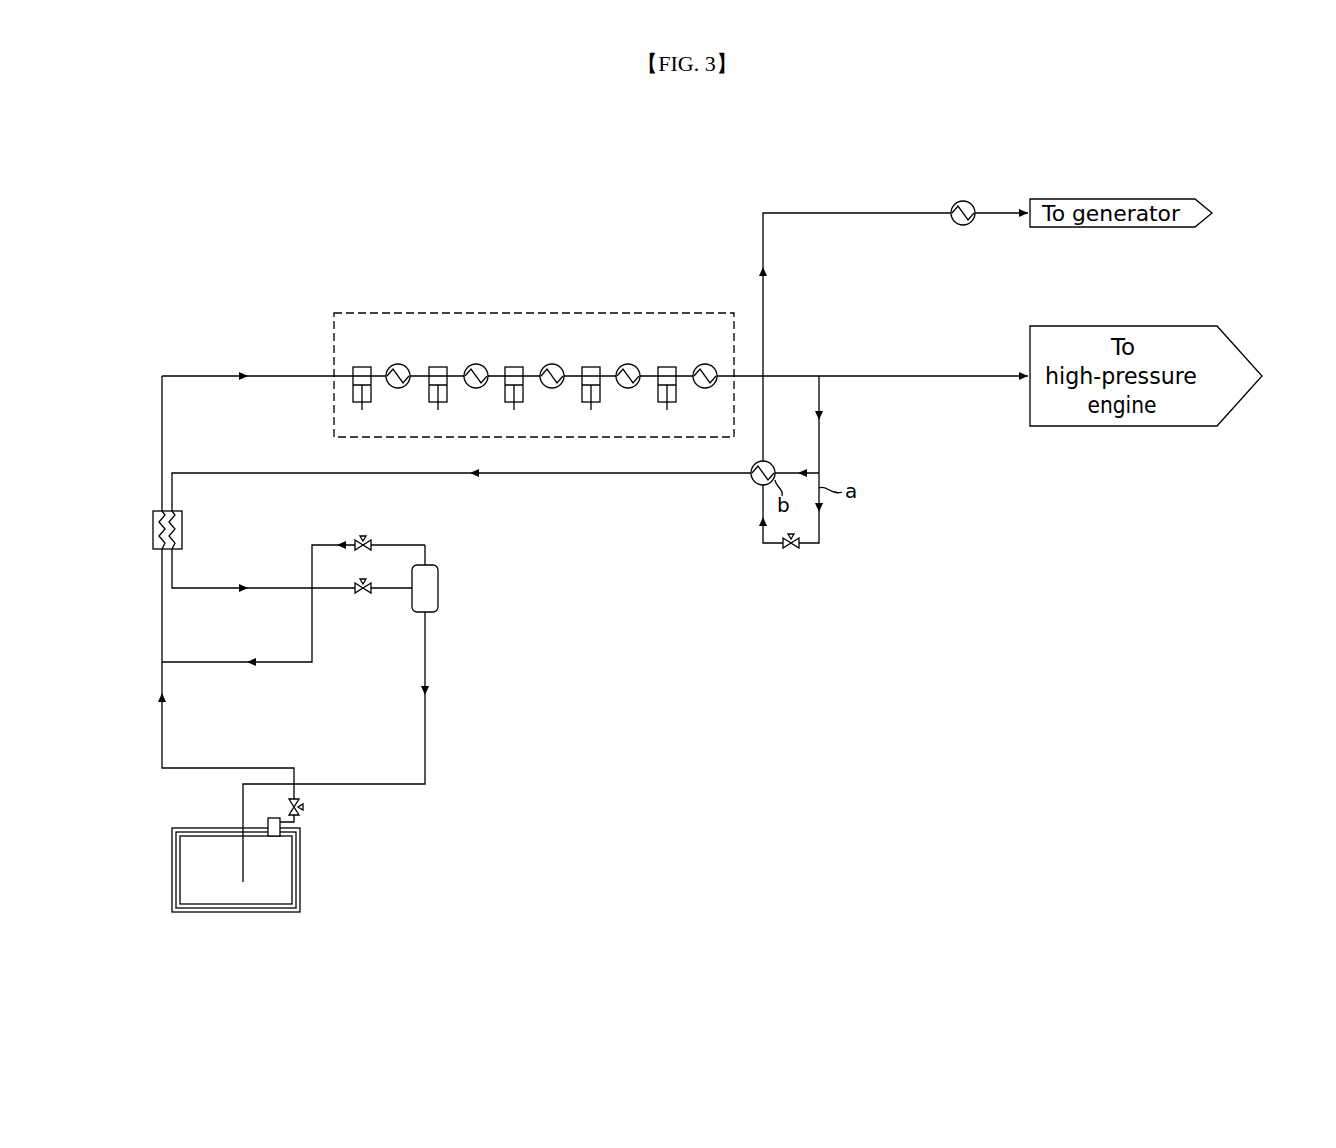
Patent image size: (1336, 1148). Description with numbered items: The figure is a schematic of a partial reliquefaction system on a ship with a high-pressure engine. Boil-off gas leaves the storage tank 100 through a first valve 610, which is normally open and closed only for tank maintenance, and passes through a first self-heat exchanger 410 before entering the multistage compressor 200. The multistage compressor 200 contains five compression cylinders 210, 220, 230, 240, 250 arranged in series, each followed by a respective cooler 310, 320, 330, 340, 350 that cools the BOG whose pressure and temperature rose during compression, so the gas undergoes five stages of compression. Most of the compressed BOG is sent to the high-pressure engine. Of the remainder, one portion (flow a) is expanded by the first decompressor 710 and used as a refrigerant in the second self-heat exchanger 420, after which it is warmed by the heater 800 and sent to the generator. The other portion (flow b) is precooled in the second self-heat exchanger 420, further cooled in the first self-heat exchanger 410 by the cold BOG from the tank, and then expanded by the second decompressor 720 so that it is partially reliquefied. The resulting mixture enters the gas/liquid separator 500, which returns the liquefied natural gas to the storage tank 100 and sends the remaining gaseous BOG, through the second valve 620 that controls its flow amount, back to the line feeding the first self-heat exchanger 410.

The storage tank 100 is at (236, 912).
The multistage compressor 200 is at (517, 313).
The compression cylinder 210 is at (362, 367).
The compression cylinder 220 is at (438, 367).
The compression cylinder 230 is at (514, 367).
The compression cylinder 240 is at (591, 367).
The compression cylinder 250 is at (667, 367).
The cooler 310 is at (398, 388).
The cooler 320 is at (476, 388).
The cooler 330 is at (552, 388).
The cooler 340 is at (628, 388).
The cooler 350 is at (705, 388).
The first self-heat exchanger 410 is at (182, 530).
The second self-heat exchanger 420 is at (772, 464).
The gas/liquid separator 500 is at (438, 585).
The first valve 610 is at (304, 807).
The second valve 620 is at (363, 536).
The first decompressor 710 is at (791, 550).
The second decompressor 720 is at (363, 596).
The heater 800 is at (963, 225).